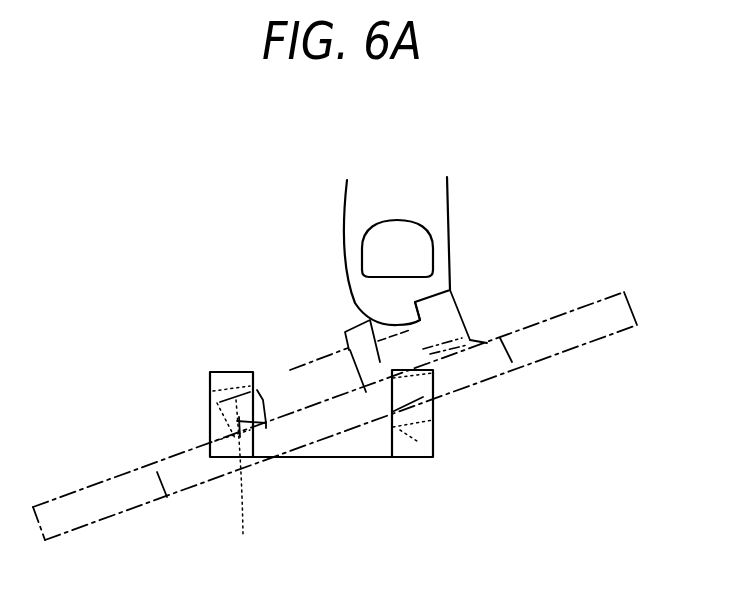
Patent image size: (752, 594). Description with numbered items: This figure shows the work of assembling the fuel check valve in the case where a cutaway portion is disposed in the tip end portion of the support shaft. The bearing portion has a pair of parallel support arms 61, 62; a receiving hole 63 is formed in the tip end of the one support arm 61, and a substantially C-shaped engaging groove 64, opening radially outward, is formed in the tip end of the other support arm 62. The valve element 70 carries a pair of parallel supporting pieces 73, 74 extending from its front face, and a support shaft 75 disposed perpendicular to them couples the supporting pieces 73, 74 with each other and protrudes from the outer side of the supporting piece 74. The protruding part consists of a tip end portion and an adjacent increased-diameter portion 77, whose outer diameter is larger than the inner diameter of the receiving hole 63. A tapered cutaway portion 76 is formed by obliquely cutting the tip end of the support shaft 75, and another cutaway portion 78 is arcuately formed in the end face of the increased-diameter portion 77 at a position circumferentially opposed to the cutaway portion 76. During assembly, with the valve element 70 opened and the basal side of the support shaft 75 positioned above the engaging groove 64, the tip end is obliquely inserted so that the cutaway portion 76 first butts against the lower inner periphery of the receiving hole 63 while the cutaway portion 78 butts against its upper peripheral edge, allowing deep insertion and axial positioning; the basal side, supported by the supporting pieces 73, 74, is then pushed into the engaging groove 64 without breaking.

The support arm 61 is at (228, 372).
The support arm 62 is at (433, 445).
The receiving hole 63 is at (210, 400).
The engaging groove 64 is at (435, 415).
The valve element 70 is at (611, 291).
The supporting piece 73 is at (462, 300).
The supporting piece 74 is at (343, 317).
The support shaft 75 is at (474, 336).
The cutaway portion 76 is at (240, 484).
The increased-diameter portion 77 is at (303, 362).
The cutaway portion 78 is at (268, 397).